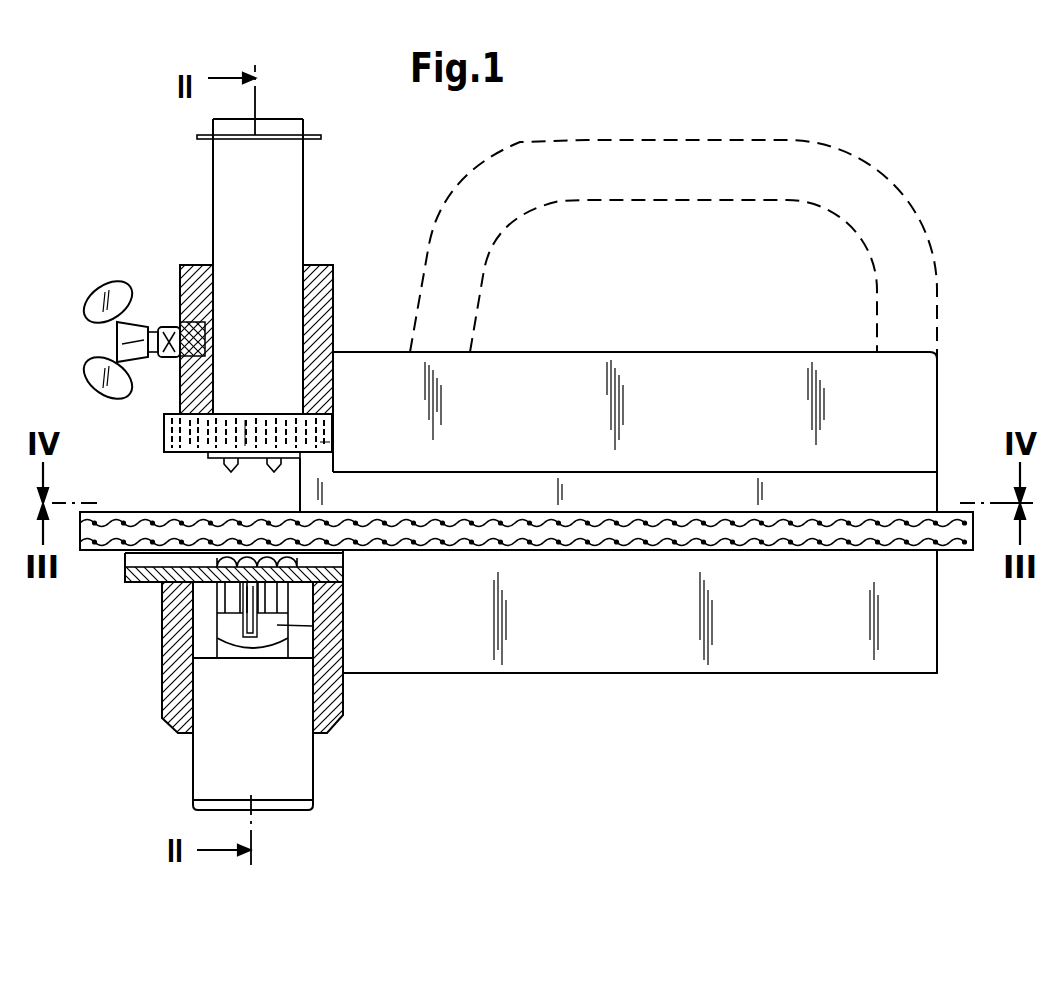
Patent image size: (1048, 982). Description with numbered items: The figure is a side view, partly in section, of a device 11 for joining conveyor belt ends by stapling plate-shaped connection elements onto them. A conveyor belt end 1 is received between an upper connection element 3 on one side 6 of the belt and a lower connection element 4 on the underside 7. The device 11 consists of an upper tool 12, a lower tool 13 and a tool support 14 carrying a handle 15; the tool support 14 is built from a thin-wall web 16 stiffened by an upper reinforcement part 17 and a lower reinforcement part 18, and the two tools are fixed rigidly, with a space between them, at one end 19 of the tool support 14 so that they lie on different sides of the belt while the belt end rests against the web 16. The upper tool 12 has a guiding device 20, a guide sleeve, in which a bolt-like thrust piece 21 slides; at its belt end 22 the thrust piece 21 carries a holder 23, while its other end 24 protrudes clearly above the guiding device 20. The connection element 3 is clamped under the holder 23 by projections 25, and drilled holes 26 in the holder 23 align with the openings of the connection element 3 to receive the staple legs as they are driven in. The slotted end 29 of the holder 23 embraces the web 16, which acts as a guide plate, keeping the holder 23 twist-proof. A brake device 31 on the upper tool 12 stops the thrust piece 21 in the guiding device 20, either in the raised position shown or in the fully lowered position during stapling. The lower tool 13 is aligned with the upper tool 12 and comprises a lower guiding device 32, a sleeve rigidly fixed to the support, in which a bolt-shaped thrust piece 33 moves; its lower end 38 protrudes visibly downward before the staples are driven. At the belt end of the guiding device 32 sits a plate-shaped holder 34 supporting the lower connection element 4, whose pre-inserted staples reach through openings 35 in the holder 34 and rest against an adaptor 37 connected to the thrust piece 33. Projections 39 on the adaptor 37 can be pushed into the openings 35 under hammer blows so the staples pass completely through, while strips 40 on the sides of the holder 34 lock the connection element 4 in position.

The conveyor belt end 1 is at (570, 540).
The connection element 3 is at (212, 457).
The connection element 4 is at (220, 580).
The side 6 is at (945, 512).
The underside 7 is at (953, 550).
The device 11 is at (941, 197).
The upper tool 12 is at (322, 250).
The lower tool 13 is at (343, 745).
The tool support 14 is at (948, 391).
The handle 15 is at (755, 157).
The web 16 is at (705, 488).
The upper reinforcement part 17 is at (743, 360).
The lower reinforcement part 18 is at (917, 645).
The end of tool support 19 is at (393, 660).
The guiding device 20 is at (320, 290).
The thrust piece 21 is at (290, 178).
The end of thrust piece 22 is at (225, 390).
The holder 23 is at (167, 433).
The other end of thrust piece 24 is at (225, 125).
The projection 25 is at (232, 468).
The drilled hole 26 is at (245, 420).
The end of holder 29 is at (320, 442).
The brake device 31 is at (100, 345).
The lower guiding device 32 is at (167, 703).
The thrust piece 33 is at (200, 757).
The plate-shaped holder 34 is at (123, 577).
The opening 35 is at (233, 580).
The adaptor 37 is at (268, 652).
The lower end of thrust piece 38 is at (277, 810).
The projection 39 is at (228, 630).
The strip 40 is at (332, 558).